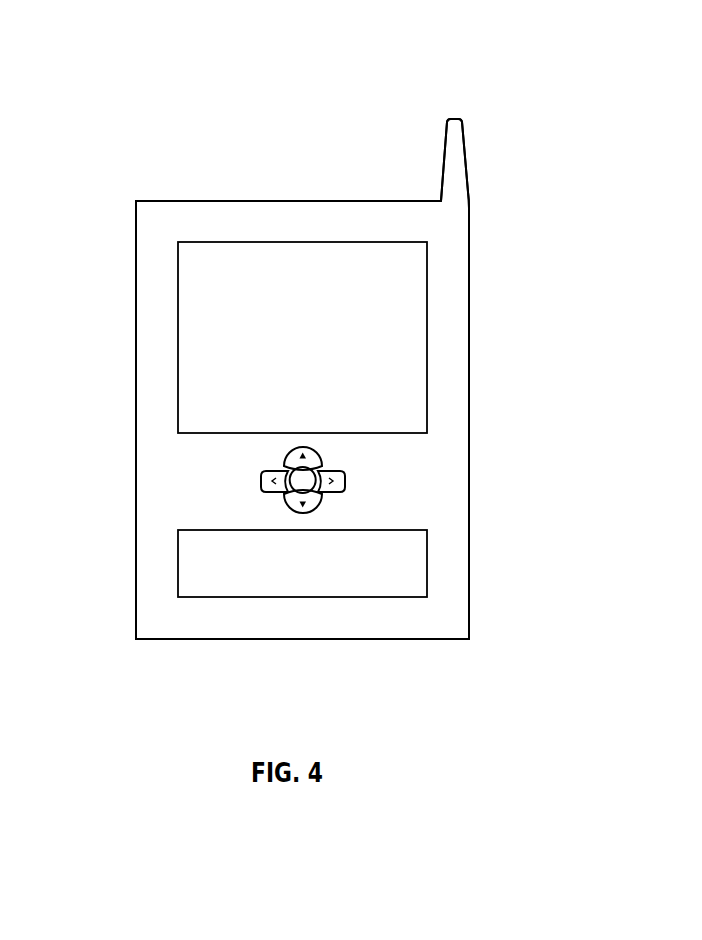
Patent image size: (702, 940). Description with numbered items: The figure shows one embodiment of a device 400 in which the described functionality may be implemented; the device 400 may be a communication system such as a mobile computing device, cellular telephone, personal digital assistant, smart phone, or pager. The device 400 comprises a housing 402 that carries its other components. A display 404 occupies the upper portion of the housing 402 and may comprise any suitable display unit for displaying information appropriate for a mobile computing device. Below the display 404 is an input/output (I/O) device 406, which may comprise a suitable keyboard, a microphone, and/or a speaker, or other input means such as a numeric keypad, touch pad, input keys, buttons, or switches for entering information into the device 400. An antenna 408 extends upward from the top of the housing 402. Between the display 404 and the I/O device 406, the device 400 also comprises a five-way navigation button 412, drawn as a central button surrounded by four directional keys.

The device 400 is at (78, 44).
The housing 402 is at (469, 420).
The display 404 is at (427, 257).
The input/output (I/O) device 406 is at (427, 557).
The antenna 408 is at (441, 154).
The five-way navigation button 412 is at (355, 474).